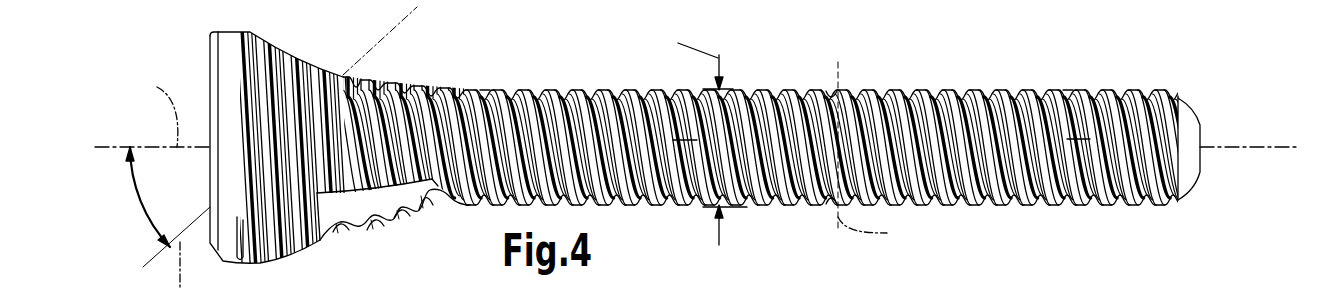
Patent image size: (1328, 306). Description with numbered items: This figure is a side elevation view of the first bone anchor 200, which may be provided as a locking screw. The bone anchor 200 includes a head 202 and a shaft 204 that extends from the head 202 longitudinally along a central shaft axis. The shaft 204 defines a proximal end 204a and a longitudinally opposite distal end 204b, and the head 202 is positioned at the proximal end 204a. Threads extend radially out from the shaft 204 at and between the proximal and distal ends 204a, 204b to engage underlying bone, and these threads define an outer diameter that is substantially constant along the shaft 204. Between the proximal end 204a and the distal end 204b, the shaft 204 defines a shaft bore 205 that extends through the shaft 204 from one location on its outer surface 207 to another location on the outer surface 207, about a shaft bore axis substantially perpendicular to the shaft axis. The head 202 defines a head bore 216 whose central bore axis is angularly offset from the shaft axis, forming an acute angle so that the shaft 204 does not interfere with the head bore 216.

The first bone anchor 200 is at (1160, 72).
The head 202 is at (260, 33).
The head bore 216 is at (370, 76).
The shaft 204 is at (988, 100).
The proximal end 204a is at (485, 96).
The distal end 204b is at (1187, 108).
The shaft bore 205 is at (831, 100).
The outer surface 207 is at (1068, 100).